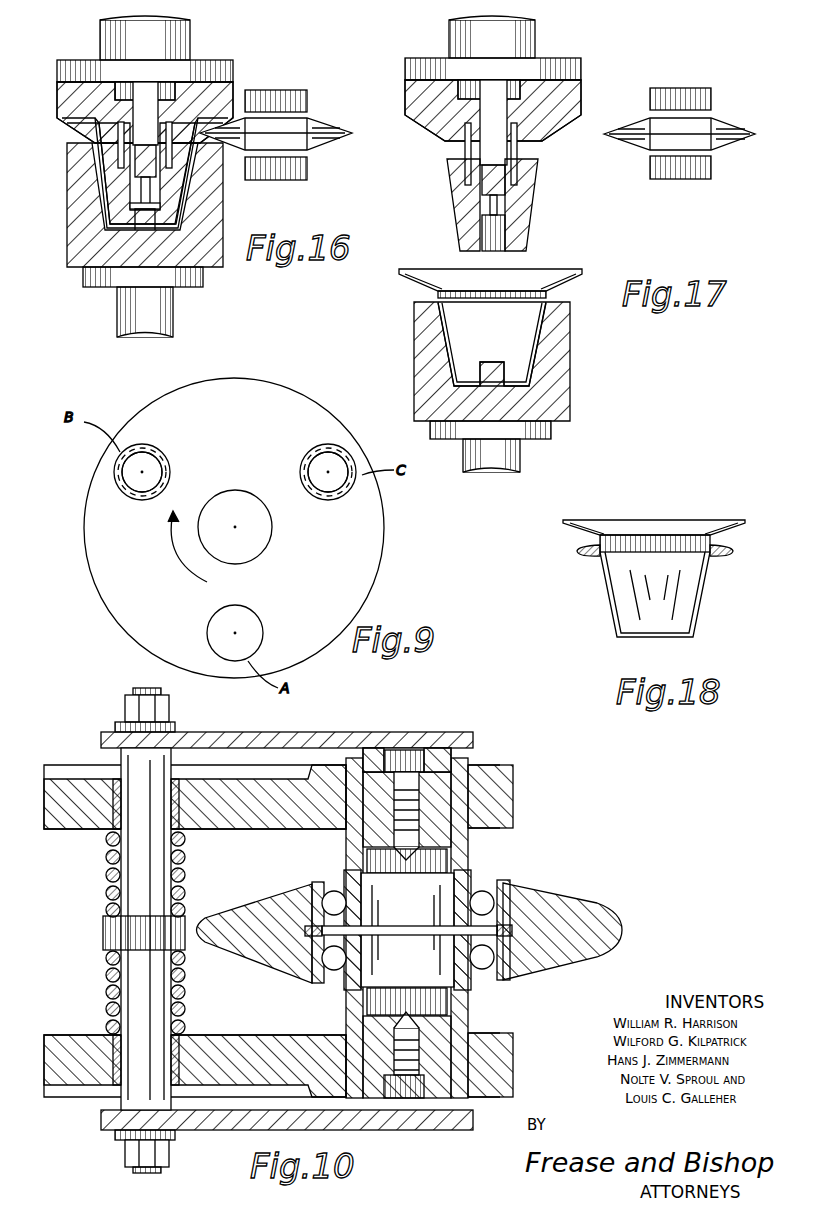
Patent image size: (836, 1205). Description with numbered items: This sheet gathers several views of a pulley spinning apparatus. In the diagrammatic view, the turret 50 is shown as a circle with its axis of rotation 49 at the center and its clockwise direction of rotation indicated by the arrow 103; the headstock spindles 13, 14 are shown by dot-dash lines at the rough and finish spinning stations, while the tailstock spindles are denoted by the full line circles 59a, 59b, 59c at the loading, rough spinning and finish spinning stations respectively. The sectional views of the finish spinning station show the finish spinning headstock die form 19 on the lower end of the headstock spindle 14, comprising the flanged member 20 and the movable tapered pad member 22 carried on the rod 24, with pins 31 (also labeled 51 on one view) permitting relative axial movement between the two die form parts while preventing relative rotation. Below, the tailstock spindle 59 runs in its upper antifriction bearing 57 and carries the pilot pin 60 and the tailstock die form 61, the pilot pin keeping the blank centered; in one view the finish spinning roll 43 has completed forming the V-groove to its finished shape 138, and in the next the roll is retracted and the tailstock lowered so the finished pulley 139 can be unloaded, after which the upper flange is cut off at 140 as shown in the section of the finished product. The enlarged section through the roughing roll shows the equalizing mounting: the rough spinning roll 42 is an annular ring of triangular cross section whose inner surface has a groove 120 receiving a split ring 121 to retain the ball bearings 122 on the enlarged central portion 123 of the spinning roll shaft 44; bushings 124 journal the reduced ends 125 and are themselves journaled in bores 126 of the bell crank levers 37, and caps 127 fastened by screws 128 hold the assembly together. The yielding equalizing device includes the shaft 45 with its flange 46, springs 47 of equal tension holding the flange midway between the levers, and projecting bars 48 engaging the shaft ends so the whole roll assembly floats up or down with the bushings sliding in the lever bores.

In FIG. 9, the headstock spindle 13 is at (148, 453).
In FIG. 16, the headstock spindle 14 is at (182, 50).
In FIG. 17, the headstock spindle 14 is at (535, 48).
In FIG. 9, the headstock spindle 14 is at (340, 450).
In FIG. 16, the finish spinning headstock die form 19 is at (60, 100).
In FIG. 17, the finish spinning headstock die form 19 is at (440, 132).
In FIG. 16, the flanged member 20 is at (225, 80).
In FIG. 17, the flanged member 20 is at (570, 92).
In FIG. 16, the tapered plug or pad member 22 is at (115, 181).
In FIG. 17, the tapered plug or pad member 22 is at (458, 195).
In FIG. 16, the rod 24 is at (133, 112).
In FIG. 17, the rod 24 is at (480, 128).
In FIG. 17, the pins 31 is at (528, 112).
In FIG. 16, the pin insert 51 is at (182, 115).
In FIG. 10, the bell crank levers 37 is at (514, 793).
In FIG. 10, the rough spinning roll 42 is at (588, 912).
In FIG. 16, the finish spinning roll 43 is at (320, 148).
In FIG. 17, the finish spinning roll 43 is at (742, 142).
In FIG. 10, the spinning roll shaft 44 is at (440, 832).
In FIG. 10, the shaft 45 is at (146, 930).
In FIG. 10, the flange 46 is at (100, 942).
In FIG. 10, the springs 47 is at (104, 866).
In FIG. 10, the projecting bar 48 is at (270, 733).
In FIG. 9, the axis of rotation 49 is at (240, 507).
In FIG. 9, the turret 50 is at (384, 566).
In FIG. 16, the upper antifriction bearing 57 is at (285, 92).
In FIG. 17, the upper antifriction bearing 57 is at (695, 90).
In FIG. 16, the tailstock spindle 59 is at (175, 313).
In FIG. 17, the tailstock spindle 59 is at (522, 459).
In FIG. 9, the tailstock spindle circle 59a is at (263, 633).
In FIG. 9, the tailstock spindle circle 59b is at (143, 500).
In FIG. 9, the tailstock spindle circle 59c is at (330, 500).
In FIG. 16, the pilot pin 60 is at (150, 204).
In FIG. 17, the pilot pin 60 is at (494, 362).
In FIG. 16, the tailstock die form 61 is at (80, 246).
In FIG. 17, the tailstock die form 61 is at (560, 410).
In FIG. 9, the arrow 103 is at (184, 555).
In FIG. 10, the groove 120 is at (512, 922).
In FIG. 10, the split ring 121 is at (505, 926).
In FIG. 10, the ball bearings 122 is at (497, 880).
In FIG. 10, the enlarged central portion 123 is at (407, 930).
In FIG. 10, the bushings 124 is at (346, 840).
In FIG. 10, the reduced ends 125 is at (407, 932).
In FIG. 10, the bores 126 is at (475, 795).
In FIG. 10, the caps 127 is at (440, 748).
In FIG. 10, the screws 128 is at (428, 748).
In FIG. 17, the finished shape 138 is at (552, 297).
In FIG. 17, the finished pulley 139 is at (565, 270).
In FIG. 18, the cut-off location 140 is at (573, 526).